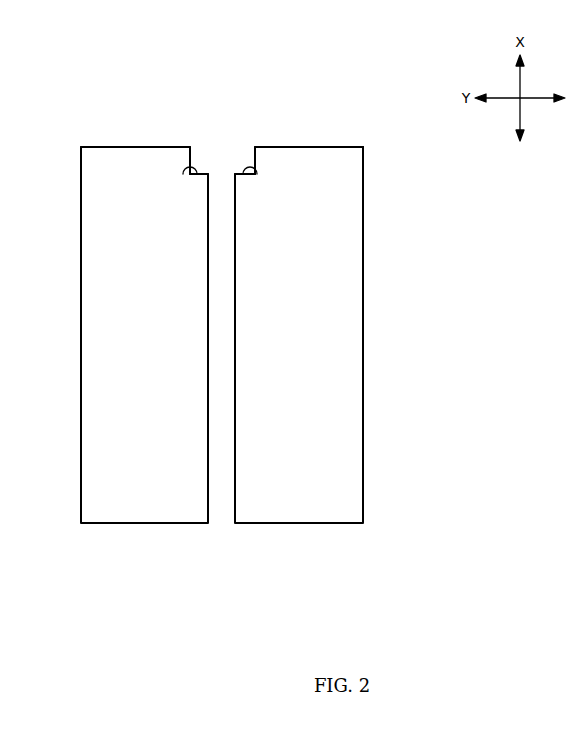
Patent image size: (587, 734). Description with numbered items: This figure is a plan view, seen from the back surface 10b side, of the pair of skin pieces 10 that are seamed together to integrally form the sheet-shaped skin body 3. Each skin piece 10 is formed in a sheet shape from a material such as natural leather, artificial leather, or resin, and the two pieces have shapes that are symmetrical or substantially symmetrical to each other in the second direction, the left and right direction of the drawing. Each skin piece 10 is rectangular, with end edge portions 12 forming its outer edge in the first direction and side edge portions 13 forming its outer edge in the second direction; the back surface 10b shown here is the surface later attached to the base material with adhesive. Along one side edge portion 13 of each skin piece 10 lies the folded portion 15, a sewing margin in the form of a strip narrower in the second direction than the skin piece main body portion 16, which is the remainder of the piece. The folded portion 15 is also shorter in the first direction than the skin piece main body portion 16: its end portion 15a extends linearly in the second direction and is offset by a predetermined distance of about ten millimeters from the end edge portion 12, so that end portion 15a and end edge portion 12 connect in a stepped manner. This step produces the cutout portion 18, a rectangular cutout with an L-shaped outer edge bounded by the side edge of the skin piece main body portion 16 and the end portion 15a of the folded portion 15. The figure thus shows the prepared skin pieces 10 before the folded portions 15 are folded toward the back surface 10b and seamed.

The skin body 3 is at (369, 130).
The skin piece 10 is at (98, 288).
The back surface 10b is at (98, 354).
The end edge portion 12 is at (136, 147).
The side edge portion 13 is at (81, 212).
The folded portion 15 is at (190, 101).
The end portion 15a is at (189, 177).
The skin piece main body portion 16 is at (82, 101).
The cutout portion 18 is at (190, 167).